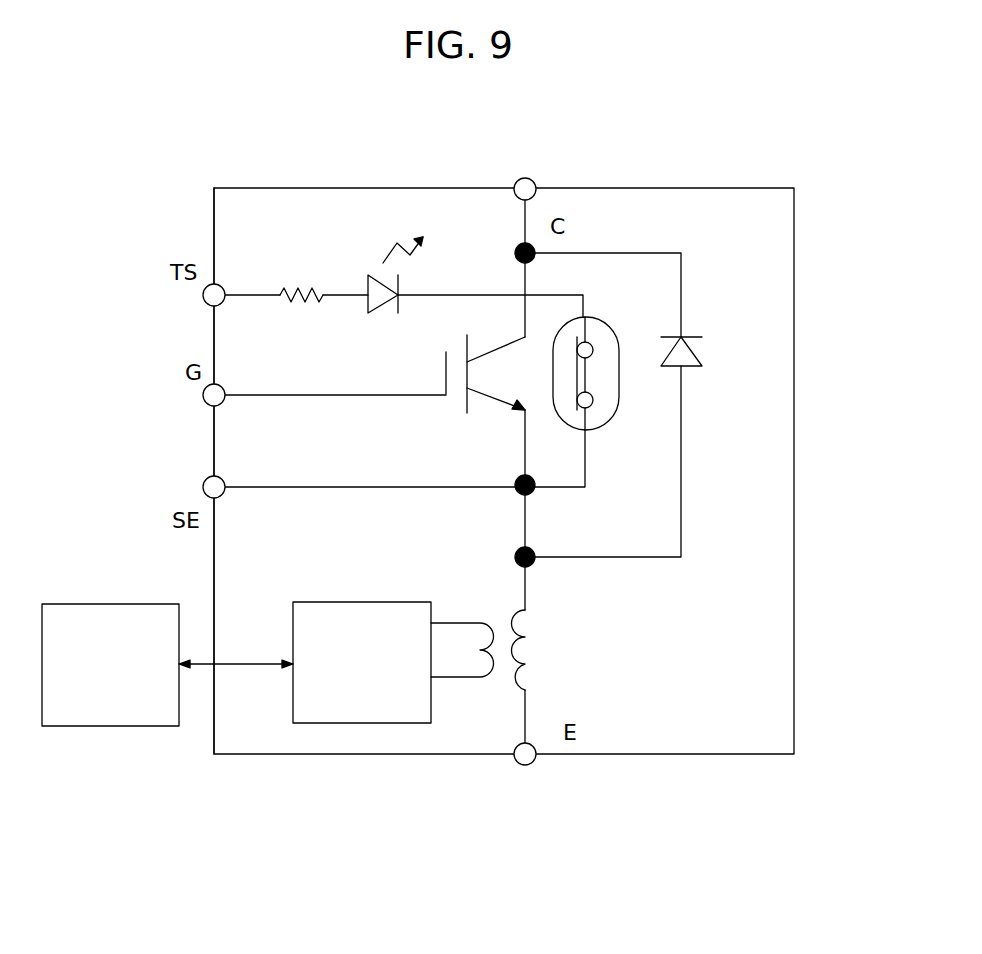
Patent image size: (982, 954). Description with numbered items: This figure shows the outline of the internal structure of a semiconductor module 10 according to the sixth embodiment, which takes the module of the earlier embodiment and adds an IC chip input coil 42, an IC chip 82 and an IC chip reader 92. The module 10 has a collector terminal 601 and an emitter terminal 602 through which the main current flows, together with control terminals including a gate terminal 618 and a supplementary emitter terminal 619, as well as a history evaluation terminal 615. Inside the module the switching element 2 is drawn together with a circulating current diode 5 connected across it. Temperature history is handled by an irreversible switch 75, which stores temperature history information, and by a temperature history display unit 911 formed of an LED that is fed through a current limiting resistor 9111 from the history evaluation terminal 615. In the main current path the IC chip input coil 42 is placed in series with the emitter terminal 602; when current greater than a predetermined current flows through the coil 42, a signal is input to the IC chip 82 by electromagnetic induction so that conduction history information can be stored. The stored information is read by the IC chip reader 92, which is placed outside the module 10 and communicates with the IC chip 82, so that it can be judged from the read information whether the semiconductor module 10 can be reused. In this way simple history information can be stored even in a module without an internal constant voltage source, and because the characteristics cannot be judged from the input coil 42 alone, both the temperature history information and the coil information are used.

The semiconductor module 10 is at (795, 632).
The collector terminal 601 is at (534, 181).
The emitter terminal 602 is at (536, 762).
The history evaluation terminal 615 is at (203, 297).
The gate terminal 618 is at (203, 395).
The supplementary emitter terminal 619 is at (203, 487).
The current limiting resistor 9111 is at (295, 282).
The temperature history display unit 911 is at (358, 282).
The IGBT power semiconductor element 2 is at (505, 363).
The irreversible switch 75 is at (607, 320).
The circulating current diode 5 is at (708, 348).
The IC chip input coil 42 is at (498, 680).
The IC chip 82 is at (368, 708).
The IC chip reader 92 is at (116, 710).